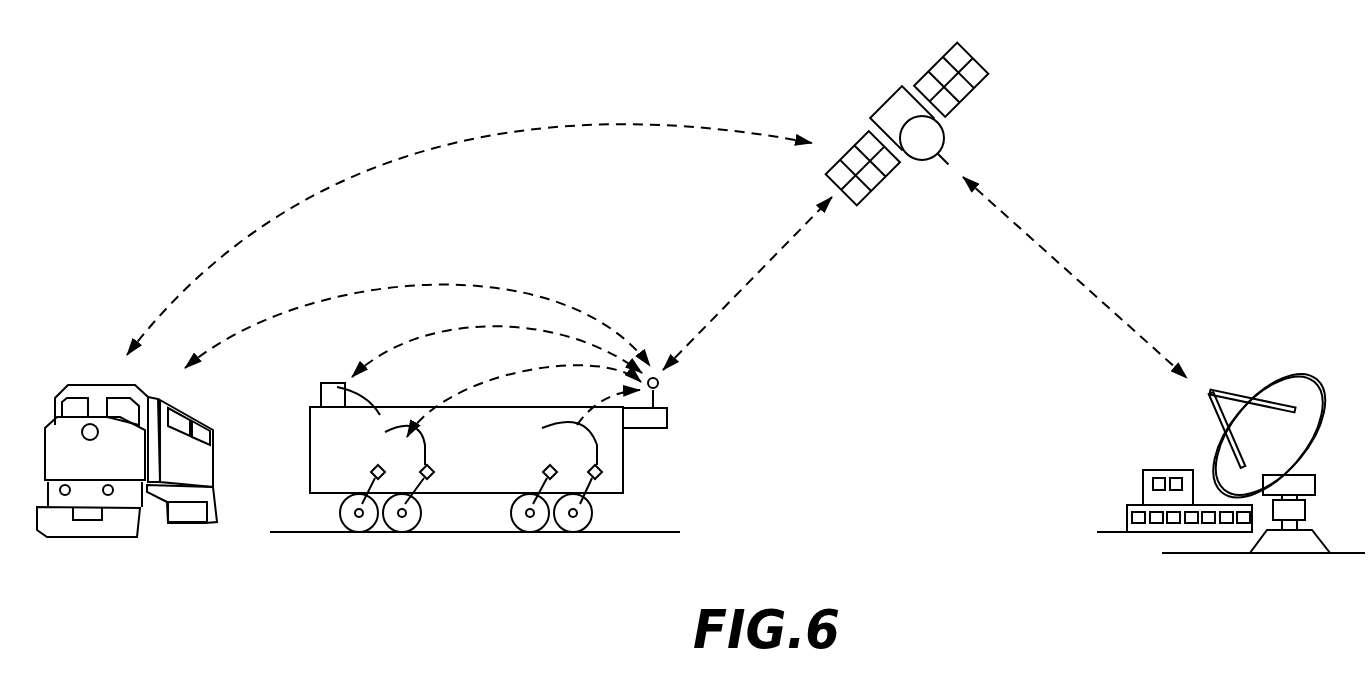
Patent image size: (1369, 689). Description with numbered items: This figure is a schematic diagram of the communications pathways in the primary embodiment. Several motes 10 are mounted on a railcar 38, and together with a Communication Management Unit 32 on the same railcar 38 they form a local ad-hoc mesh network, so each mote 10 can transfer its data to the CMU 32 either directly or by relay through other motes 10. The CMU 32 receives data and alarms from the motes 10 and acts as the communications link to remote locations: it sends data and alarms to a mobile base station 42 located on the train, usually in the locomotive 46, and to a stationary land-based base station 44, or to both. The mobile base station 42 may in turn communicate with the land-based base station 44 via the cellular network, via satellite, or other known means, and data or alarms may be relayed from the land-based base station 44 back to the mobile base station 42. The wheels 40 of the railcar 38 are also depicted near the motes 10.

The mote 10 is at (382, 468).
The Communication Management Unit 32 is at (657, 420).
The railcar 38 is at (627, 467).
The wheel 40 is at (402, 523).
The mobile base station 42 is at (183, 527).
The land-based base station 44 is at (1263, 550).
The locomotive 46 is at (85, 470).